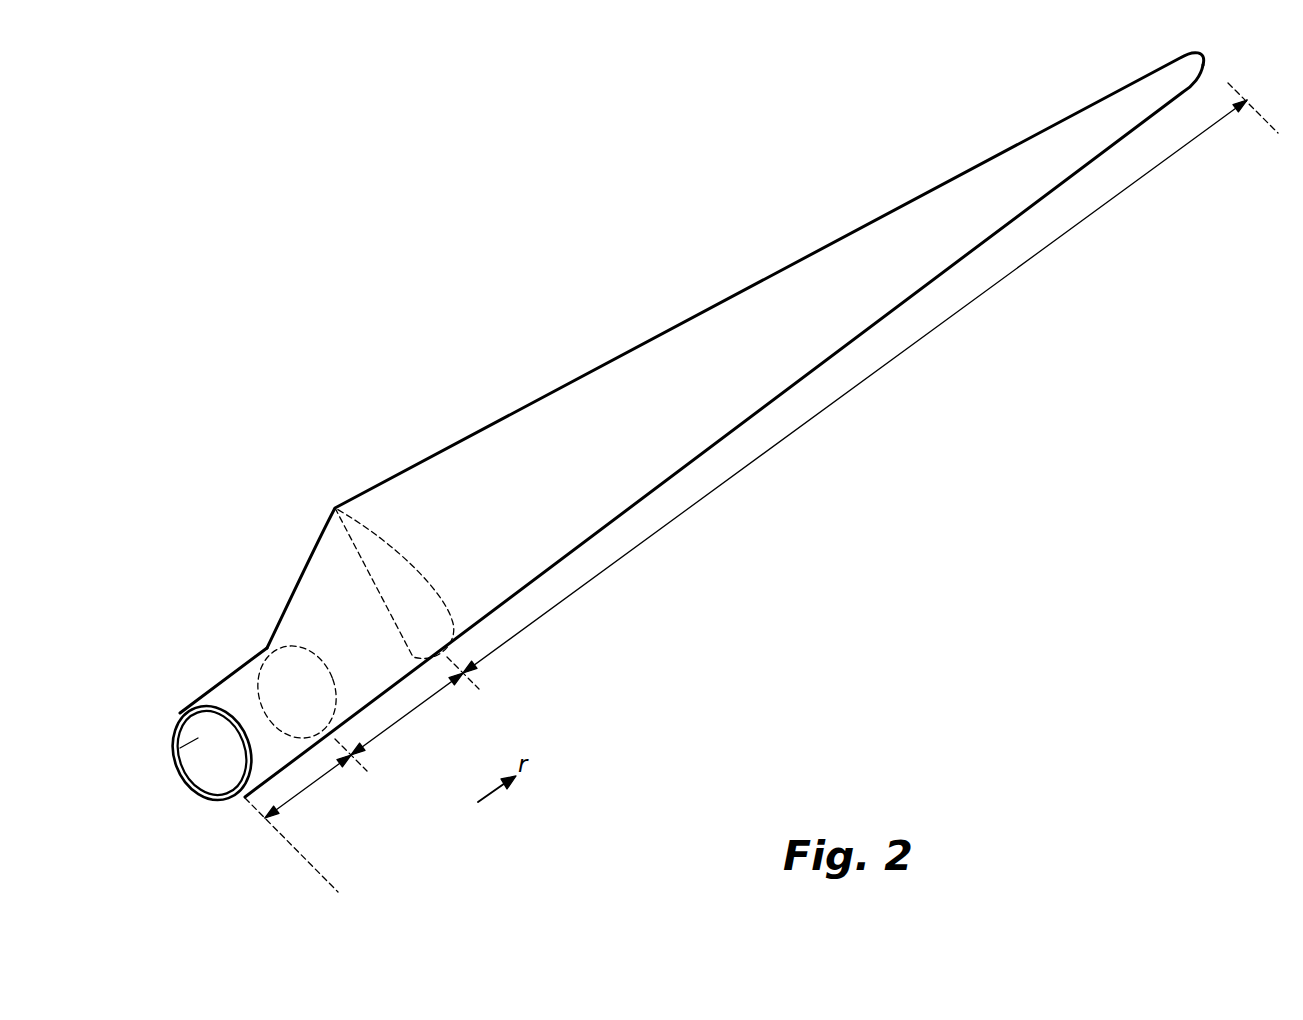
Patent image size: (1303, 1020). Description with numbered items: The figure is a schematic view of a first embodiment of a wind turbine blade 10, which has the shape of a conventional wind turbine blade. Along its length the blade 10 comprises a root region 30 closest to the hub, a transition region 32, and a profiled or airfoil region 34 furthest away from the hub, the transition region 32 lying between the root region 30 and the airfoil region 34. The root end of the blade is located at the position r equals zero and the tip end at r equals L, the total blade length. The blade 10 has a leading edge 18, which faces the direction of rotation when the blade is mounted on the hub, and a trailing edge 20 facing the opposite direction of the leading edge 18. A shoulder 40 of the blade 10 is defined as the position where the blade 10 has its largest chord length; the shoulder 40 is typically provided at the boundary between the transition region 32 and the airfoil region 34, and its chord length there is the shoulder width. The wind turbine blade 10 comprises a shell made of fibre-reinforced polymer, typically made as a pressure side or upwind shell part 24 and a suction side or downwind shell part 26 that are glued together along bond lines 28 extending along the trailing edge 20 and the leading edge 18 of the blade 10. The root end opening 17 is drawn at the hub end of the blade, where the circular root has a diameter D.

The wind turbine blade 10 is at (724, 425).
The root end opening 17 is at (173, 752).
The leading edge 18 is at (890, 315).
The trailing edge 20 is at (752, 283).
The upwind shell part 24 is at (207, 702).
The downwind shell part 26 is at (207, 796).
The bond lines 28 is at (200, 712).
The root region 30 is at (312, 788).
The transition region 32 is at (413, 712).
The airfoil region 34 is at (776, 445).
The shoulder 40 is at (335, 508).